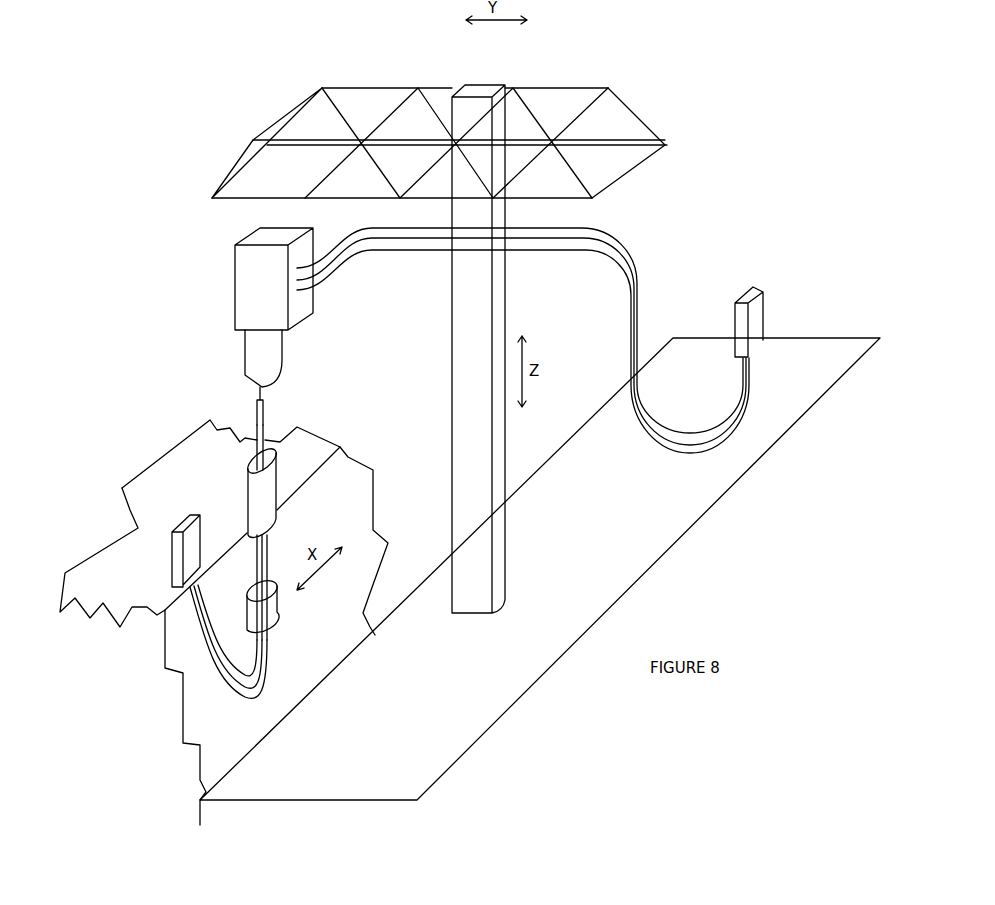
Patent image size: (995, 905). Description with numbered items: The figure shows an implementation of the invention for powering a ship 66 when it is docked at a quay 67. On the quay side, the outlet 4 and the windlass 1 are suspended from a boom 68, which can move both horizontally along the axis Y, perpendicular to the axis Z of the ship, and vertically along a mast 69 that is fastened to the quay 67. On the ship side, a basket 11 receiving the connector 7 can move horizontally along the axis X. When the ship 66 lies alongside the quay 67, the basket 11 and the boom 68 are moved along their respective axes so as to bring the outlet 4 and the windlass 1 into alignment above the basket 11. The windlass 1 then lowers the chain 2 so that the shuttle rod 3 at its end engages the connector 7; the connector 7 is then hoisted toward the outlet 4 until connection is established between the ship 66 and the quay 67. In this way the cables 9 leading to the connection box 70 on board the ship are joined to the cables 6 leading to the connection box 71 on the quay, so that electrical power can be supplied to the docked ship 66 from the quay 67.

The windlass 1 is at (260, 280).
The chain 2 is at (262, 400).
The shuttle rod 3 is at (257, 425).
The outlet 4 is at (243, 358).
The cables 6 is at (720, 440).
The connector 7 is at (243, 500).
The cables 9 is at (237, 692).
The basket 11 is at (280, 612).
The ship 66 is at (105, 578).
The quay 67 is at (433, 730).
The boom 68 is at (625, 174).
The mast 69 is at (492, 613).
The connection box 70 is at (178, 548).
The connection box 71 is at (810, 283).